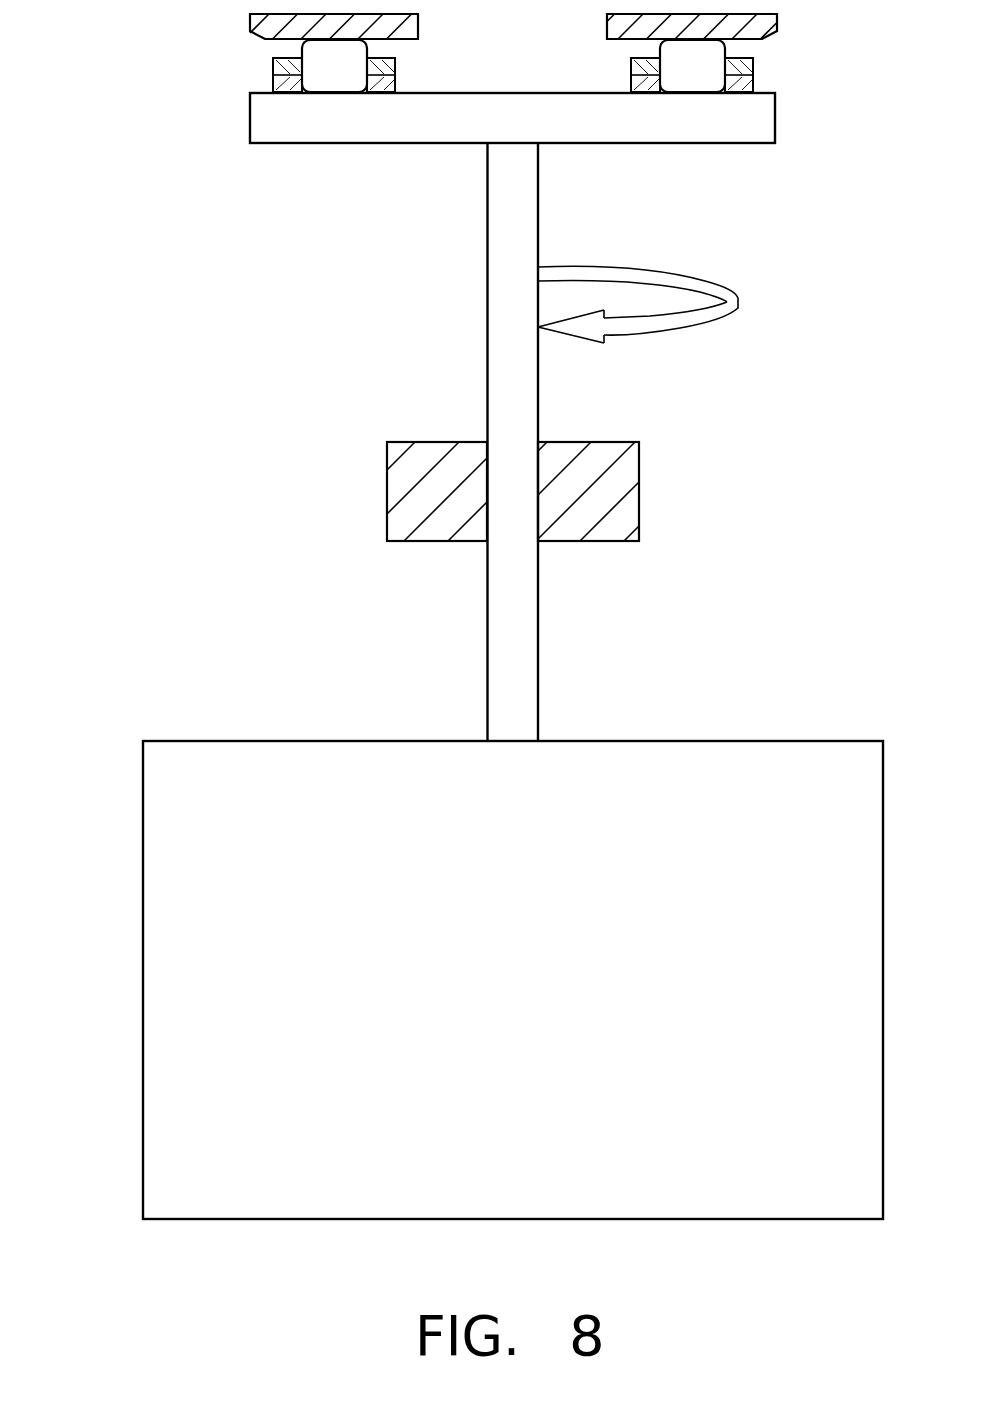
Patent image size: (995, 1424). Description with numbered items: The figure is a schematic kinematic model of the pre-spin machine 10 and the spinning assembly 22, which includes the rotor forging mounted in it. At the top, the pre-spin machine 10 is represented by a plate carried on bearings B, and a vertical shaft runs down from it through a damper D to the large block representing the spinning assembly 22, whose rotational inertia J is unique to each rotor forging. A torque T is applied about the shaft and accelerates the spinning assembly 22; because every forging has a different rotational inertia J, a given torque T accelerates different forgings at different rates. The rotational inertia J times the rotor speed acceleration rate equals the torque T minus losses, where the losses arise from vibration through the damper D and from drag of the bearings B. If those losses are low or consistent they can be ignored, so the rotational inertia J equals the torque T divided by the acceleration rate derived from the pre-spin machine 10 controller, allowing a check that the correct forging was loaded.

The pre-spin machine 10 is at (775, 118).
The spinning assembly 22 is at (143, 1091).
The bearings B is at (613, 43).
The torque T is at (702, 275).
The damper D is at (639, 506).
The rotational inertia J is at (521, 936).